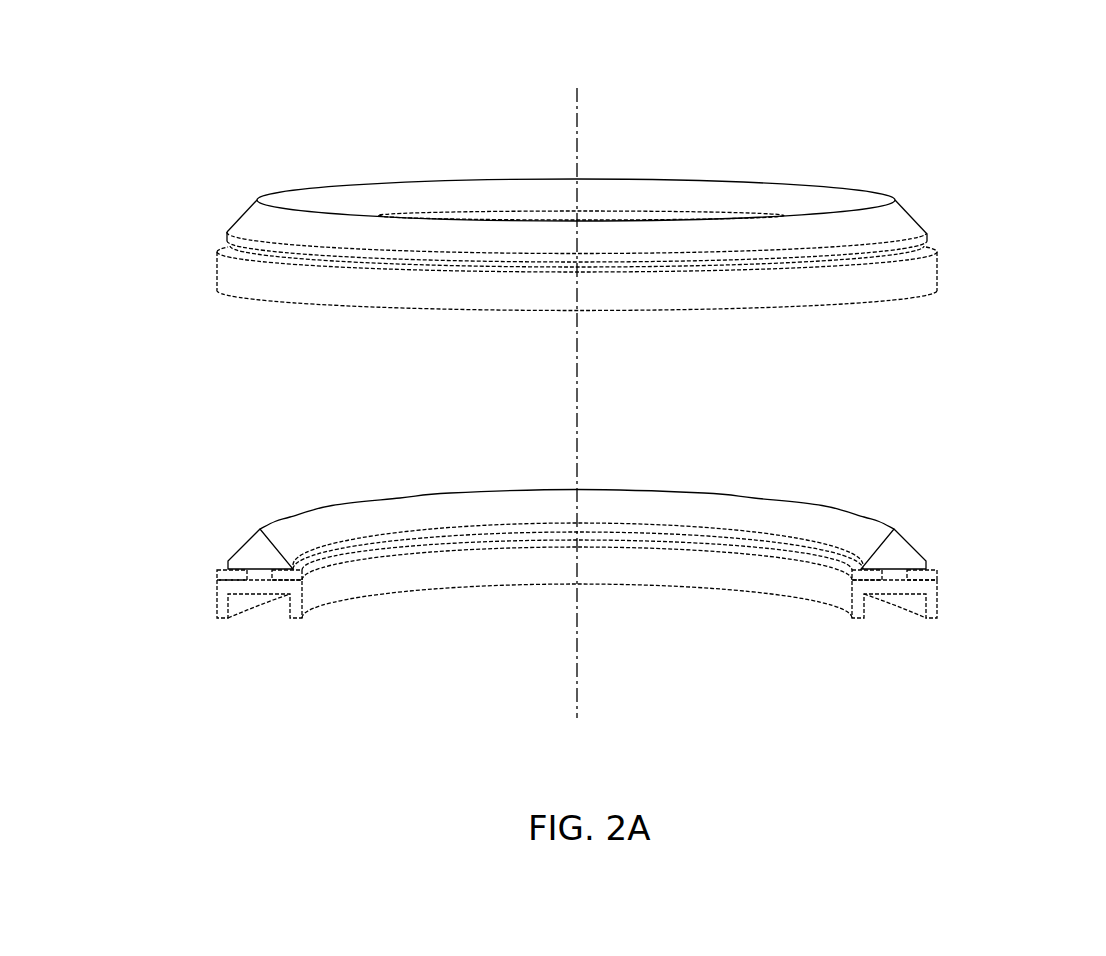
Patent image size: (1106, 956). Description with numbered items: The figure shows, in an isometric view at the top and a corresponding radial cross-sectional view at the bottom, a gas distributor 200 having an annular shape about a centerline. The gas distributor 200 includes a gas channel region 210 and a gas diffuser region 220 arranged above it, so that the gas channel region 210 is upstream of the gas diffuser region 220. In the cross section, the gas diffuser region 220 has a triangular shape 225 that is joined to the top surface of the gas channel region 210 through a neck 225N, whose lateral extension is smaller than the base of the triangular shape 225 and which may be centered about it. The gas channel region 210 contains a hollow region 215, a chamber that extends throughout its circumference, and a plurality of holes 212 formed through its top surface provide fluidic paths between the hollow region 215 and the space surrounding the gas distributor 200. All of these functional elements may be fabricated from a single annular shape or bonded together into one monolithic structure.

The gas distributor 200 is at (84, 86).
The gas channel region 210 is at (940, 270).
The holes 212 is at (232, 248).
The hollow region 215 is at (267, 603).
The gas diffuser region 220 is at (920, 213).
The triangular shape 225 is at (260, 557).
The neck 225N is at (255, 575).